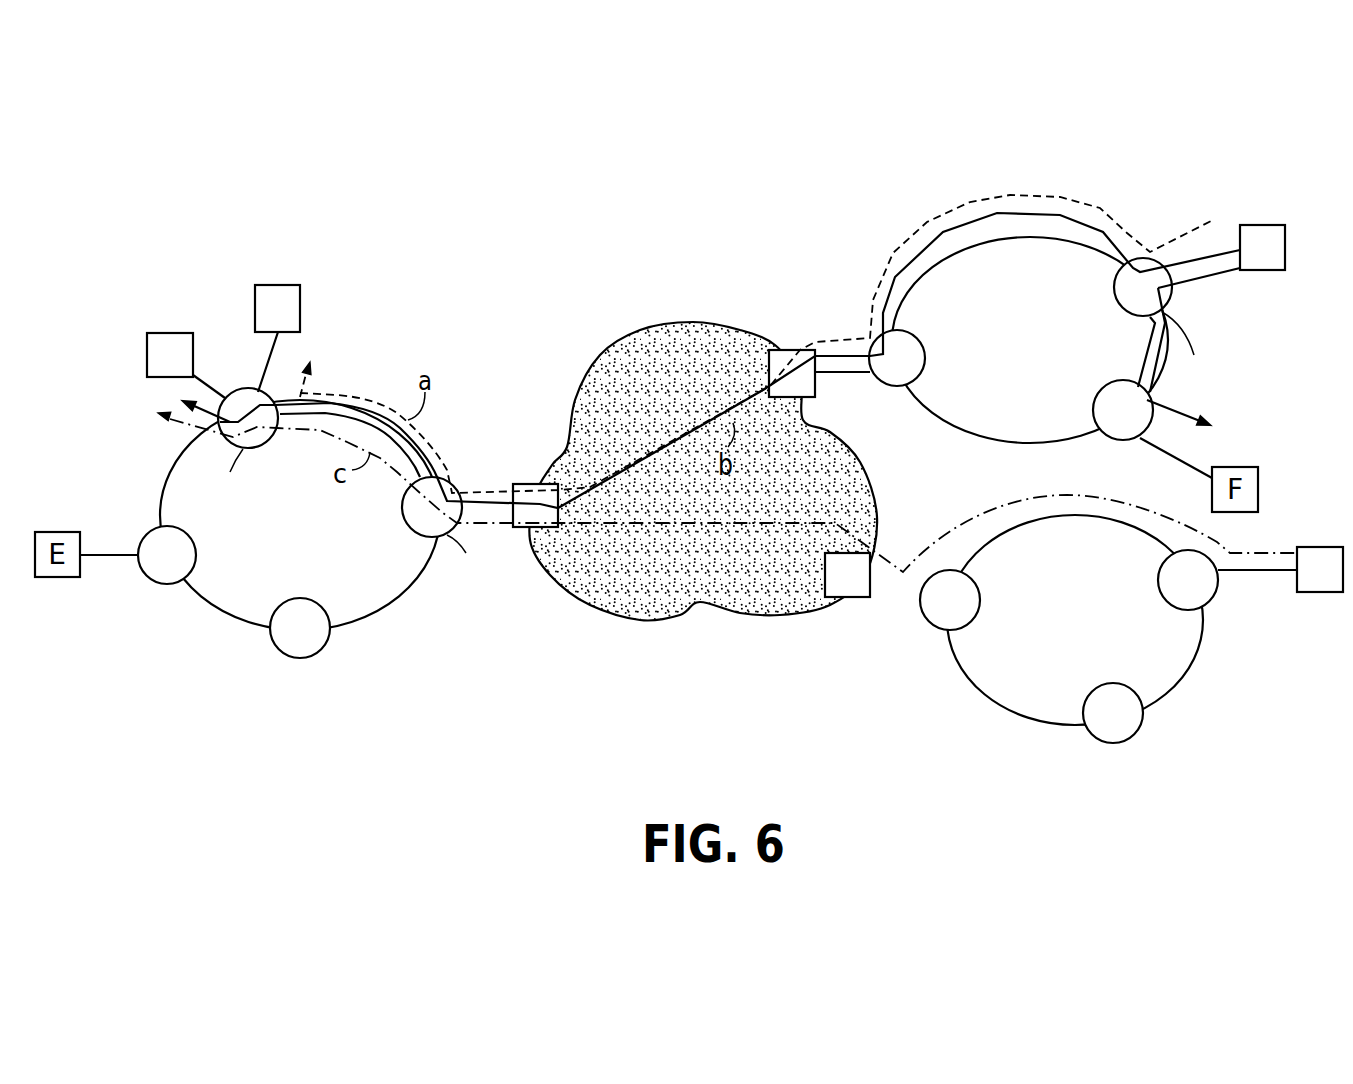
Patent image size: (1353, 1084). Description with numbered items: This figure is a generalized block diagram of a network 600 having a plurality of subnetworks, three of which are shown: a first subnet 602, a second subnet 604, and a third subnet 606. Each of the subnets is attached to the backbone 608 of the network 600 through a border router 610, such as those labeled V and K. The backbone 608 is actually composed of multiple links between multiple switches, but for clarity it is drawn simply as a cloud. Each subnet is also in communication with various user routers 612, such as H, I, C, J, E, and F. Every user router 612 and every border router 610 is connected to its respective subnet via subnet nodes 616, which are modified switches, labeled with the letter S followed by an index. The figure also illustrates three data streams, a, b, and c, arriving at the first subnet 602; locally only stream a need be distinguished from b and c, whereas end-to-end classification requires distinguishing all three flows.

The network 600 is at (615, 166).
The subnet-1 602 is at (322, 563).
The subnet-2 604 is at (1047, 360).
The subnet-3 606 is at (1093, 640).
The backbone 608 is at (700, 603).
The border router 610 is at (857, 655).
The user router 612 is at (268, 284).
The subnet node 616 is at (430, 537).